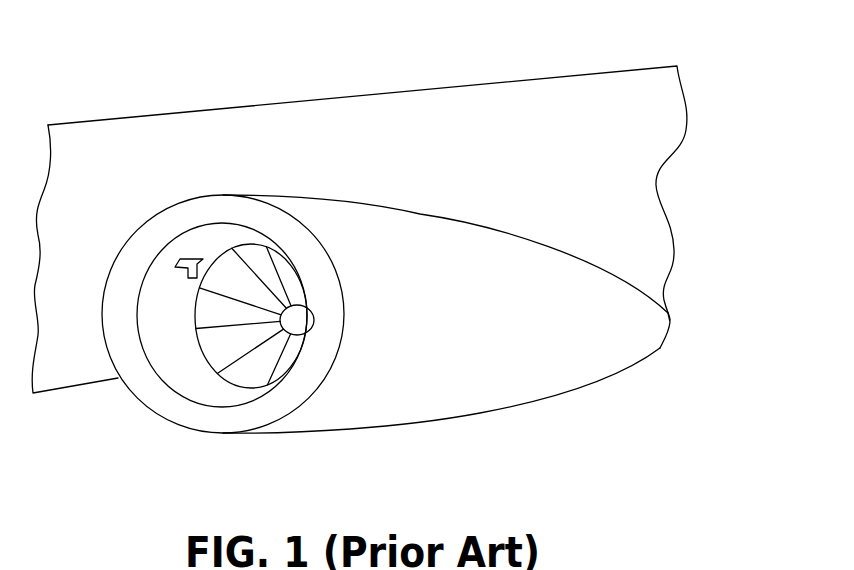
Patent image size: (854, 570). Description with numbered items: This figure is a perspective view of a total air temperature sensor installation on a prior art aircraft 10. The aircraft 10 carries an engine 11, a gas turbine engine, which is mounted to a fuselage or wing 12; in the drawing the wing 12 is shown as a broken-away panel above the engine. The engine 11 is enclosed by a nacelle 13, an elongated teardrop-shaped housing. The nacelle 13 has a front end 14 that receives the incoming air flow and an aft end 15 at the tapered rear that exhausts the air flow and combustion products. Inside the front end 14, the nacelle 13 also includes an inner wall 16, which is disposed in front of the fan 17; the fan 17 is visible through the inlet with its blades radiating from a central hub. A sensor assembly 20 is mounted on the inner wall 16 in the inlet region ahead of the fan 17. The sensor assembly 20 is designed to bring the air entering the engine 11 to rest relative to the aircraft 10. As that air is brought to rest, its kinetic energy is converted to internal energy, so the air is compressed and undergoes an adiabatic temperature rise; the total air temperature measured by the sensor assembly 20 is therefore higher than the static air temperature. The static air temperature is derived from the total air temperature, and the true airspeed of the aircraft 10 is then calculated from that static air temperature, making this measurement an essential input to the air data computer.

The aircraft 10 is at (107, 72).
The engine 11 is at (354, 185).
The fuselage or wing 12 is at (283, 123).
The nacelle 13 is at (491, 216).
The front end 14 is at (143, 385).
The aft end 15 is at (660, 348).
The inner wall 16 is at (190, 380).
The fan 17 is at (257, 365).
The sensor assembly 20 is at (164, 276).